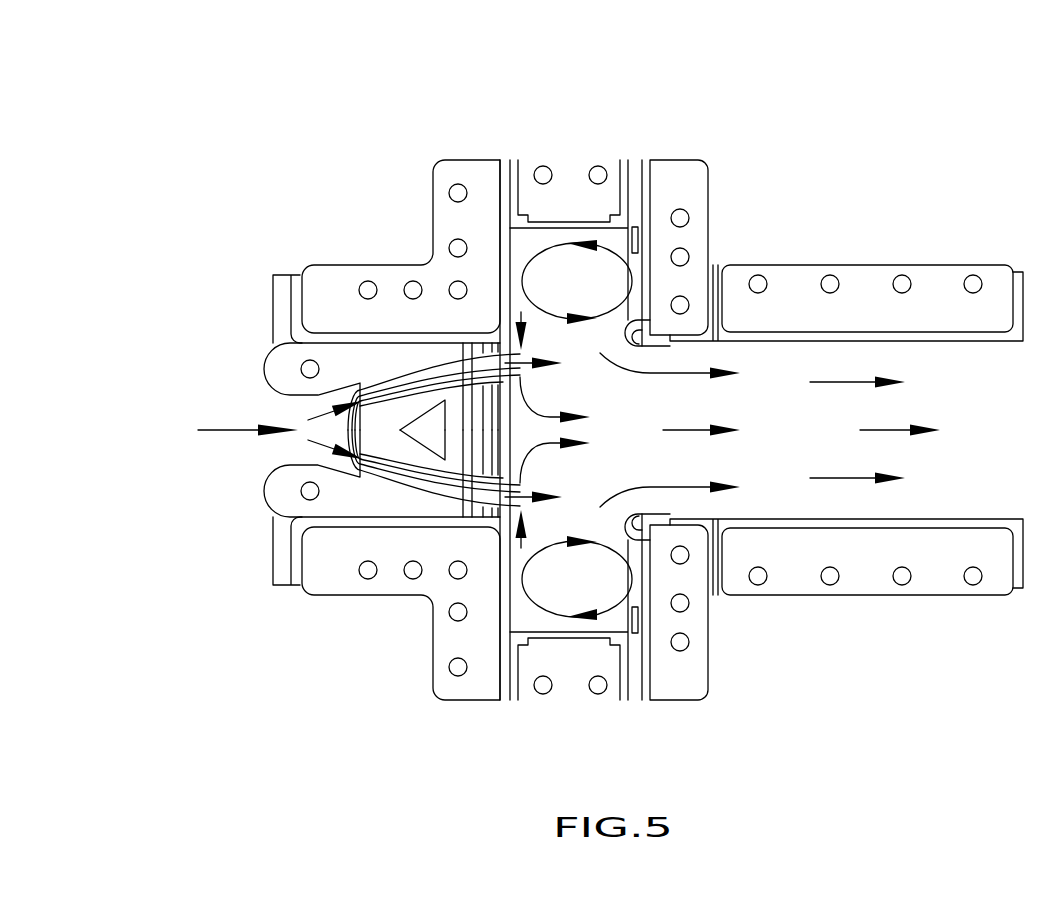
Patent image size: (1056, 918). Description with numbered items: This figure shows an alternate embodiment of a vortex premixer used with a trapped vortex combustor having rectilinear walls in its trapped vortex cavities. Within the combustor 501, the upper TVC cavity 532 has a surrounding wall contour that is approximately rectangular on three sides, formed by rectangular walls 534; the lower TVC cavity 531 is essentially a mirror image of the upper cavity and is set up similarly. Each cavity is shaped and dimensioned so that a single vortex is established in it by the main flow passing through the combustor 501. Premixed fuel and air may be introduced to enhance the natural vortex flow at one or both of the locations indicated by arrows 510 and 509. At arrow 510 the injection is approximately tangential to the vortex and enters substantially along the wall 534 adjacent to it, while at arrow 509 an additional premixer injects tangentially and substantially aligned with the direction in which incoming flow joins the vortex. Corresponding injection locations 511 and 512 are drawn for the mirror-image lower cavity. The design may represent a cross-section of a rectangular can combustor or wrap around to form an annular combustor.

The combustor 501 is at (470, 132).
The arrow (premixer injection location) 509 is at (489, 310).
The arrow (premixer injection location) 510 is at (643, 243).
The lower inlet-side mounting bracket 511 is at (489, 548).
The lower outlet-side mounting bracket 512 is at (643, 618).
The TVC cavity 531 is at (548, 588).
The TVC cavity 532 is at (593, 285).
The rectangular wall 534 is at (553, 225).